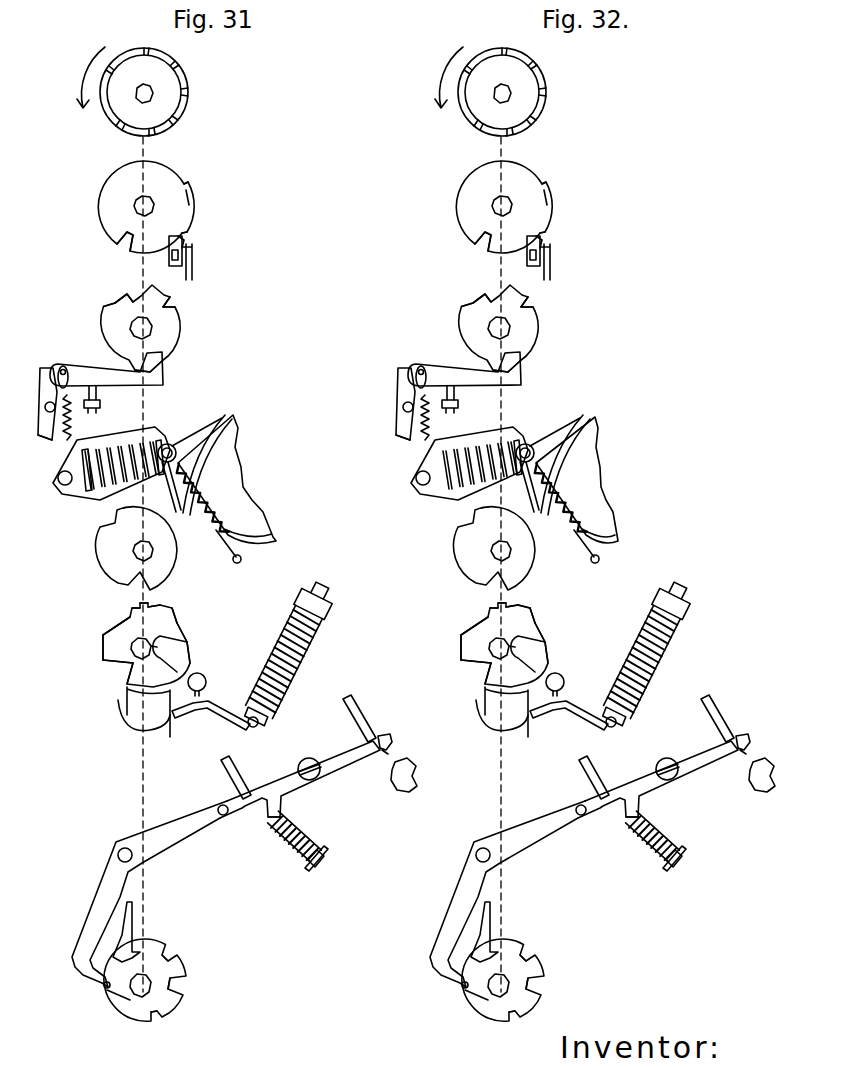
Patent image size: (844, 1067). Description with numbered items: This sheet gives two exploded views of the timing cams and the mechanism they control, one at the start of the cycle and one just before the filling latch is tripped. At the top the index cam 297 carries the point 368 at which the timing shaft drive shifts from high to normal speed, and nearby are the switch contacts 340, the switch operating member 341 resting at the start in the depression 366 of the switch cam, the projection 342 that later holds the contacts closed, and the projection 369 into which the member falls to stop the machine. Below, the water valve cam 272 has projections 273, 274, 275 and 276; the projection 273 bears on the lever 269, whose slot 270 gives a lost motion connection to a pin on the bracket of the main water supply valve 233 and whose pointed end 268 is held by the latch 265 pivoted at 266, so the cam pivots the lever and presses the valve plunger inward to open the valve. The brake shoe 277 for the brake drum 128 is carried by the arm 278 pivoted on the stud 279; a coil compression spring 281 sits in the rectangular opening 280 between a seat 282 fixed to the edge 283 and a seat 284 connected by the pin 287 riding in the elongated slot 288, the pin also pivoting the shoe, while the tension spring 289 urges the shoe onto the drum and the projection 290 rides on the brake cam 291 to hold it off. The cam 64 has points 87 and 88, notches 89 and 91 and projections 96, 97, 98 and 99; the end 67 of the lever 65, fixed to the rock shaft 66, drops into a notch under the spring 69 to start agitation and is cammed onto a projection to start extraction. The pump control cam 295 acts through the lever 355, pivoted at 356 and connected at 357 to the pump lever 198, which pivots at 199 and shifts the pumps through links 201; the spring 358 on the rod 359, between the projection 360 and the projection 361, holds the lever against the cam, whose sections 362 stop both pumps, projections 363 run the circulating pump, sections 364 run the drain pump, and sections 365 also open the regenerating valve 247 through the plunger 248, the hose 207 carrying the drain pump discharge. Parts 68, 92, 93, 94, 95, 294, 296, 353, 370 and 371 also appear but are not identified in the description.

In FIG. 31, the cam 64 is at (128, 682).
In FIG. 32, the cam 64 is at (536, 663).
In FIG. 31, the lever 65 is at (190, 710).
In FIG. 32, the lever 65 is at (569, 718).
In FIG. 31, the rock shaft 66 is at (204, 677).
In FIG. 32, the rock shaft 66 is at (568, 675).
In FIG. 31, the end of lever 67 is at (118, 705).
In FIG. 32, the end of lever 67 is at (490, 712).
In FIG. 31, the pivot pin 68 is at (248, 723).
In FIG. 32, the pivot pin 68 is at (600, 733).
In FIG. 31, the spring 69 is at (298, 658).
In FIG. 32, the spring 69 is at (647, 654).
In FIG. 31, the point 87 is at (108, 630).
In FIG. 32, the point 87 is at (461, 626).
In FIG. 31, the point 88 is at (172, 620).
In FIG. 32, the point 88 is at (540, 607).
In FIG. 31, the notch 89 is at (146, 645).
In FIG. 32, the notch 89 is at (504, 645).
In FIG. 31, the notch 91 is at (164, 658).
In FIG. 32, the notch 91 is at (522, 656).
In FIG. 31, the pawl tip 92 is at (118, 667).
In FIG. 32, the pawl tip 92 is at (469, 680).
In FIG. 31, the notch 93 is at (140, 613).
In FIG. 32, the notch 93 is at (474, 604).
In FIG. 31, the cam ear 94 is at (170, 638).
In FIG. 32, the cam ear 94 is at (548, 633).
In FIG. 31, the cam surface 95 is at (175, 607).
In FIG. 32, the cam surface 95 is at (485, 665).
In FIG. 31, the projection 96 is at (103, 637).
In FIG. 32, the projection 96 is at (447, 660).
In FIG. 31, the projection 97 is at (142, 603).
In FIG. 32, the projection 97 is at (474, 590).
In FIG. 32, the projection 98 is at (541, 590).
In FIG. 31, the projection 99 is at (192, 648).
In FIG. 32, the projection 99 is at (560, 631).
In FIG. 31, the brake drum 128 is at (258, 527).
In FIG. 32, the brake drum 128 is at (592, 480).
In FIG. 31, the lever 198 is at (286, 771).
In FIG. 32, the lever 198 is at (658, 775).
In FIG. 31, the pivot 199 is at (310, 758).
In FIG. 32, the pivot 199 is at (658, 761).
In FIG. 31, the links 201 is at (362, 712).
In FIG. 32, the links 201 is at (652, 745).
In FIG. 32, the flexible hose 207 is at (731, 766).
In FIG. 31, the valve 233 is at (95, 408).
In FIG. 31, the regenerating valve 247 is at (405, 762).
In FIG. 31, the plunger 248 is at (392, 772).
In FIG. 32, the plunger 248 is at (769, 764).
In FIG. 31, the latch 265 is at (43, 437).
In FIG. 32, the latch 265 is at (386, 446).
In FIG. 31, the pivot 266 is at (45, 407).
In FIG. 32, the pivot 266 is at (393, 417).
In FIG. 31, the pointed end 268 is at (50, 383).
In FIG. 32, the pointed end 268 is at (389, 404).
In FIG. 31, the lever 269 is at (88, 373).
In FIG. 32, the lever 269 is at (464, 363).
In FIG. 31, the slot 270 is at (62, 367).
In FIG. 32, the slot 270 is at (409, 359).
In FIG. 31, the cam 272 is at (181, 330).
In FIG. 32, the cam 272 is at (523, 328).
In FIG. 31, the projection 273 is at (154, 356).
In FIG. 32, the projection 273 is at (535, 365).
In FIG. 31, the projection 274 is at (98, 320).
In FIG. 32, the projection 274 is at (451, 311).
In FIG. 31, the projection 275 is at (126, 293).
In FIG. 32, the projection 275 is at (467, 289).
In FIG. 31, the projection 276 is at (172, 298).
In FIG. 32, the projection 276 is at (499, 285).
In FIG. 31, the brake shoe 277 is at (210, 413).
In FIG. 32, the brake shoe 277 is at (565, 453).
In FIG. 31, the arm 278 is at (152, 428).
In FIG. 32, the arm 278 is at (464, 476).
In FIG. 31, the stud 279 is at (60, 483).
In FIG. 32, the stud 279 is at (407, 490).
In FIG. 31, the rectangular opening 280 is at (117, 488).
In FIG. 32, the rectangular opening 280 is at (477, 483).
In FIG. 31, the coil compression spring 281 is at (110, 455).
In FIG. 32, the coil compression spring 281 is at (450, 465).
In FIG. 31, the seat 282 is at (88, 482).
In FIG. 32, the edge 283 is at (458, 415).
In FIG. 31, the seat 284 is at (100, 393).
In FIG. 32, the seat 284 is at (450, 393).
In FIG. 31, the pin 287 is at (177, 453).
In FIG. 32, the pin 287 is at (555, 453).
In FIG. 31, the elongated slot 288 is at (192, 465).
In FIG. 32, the elongated slot 288 is at (548, 458).
In FIG. 31, the tension spring 289 is at (205, 505).
In FIG. 32, the tension spring 289 is at (563, 498).
In FIG. 31, the projection 290 is at (208, 530).
In FIG. 31, the cam 291 is at (101, 557).
In FIG. 32, the cam 291 is at (478, 548).
In FIG. 32, the pin 294 is at (573, 542).
In FIG. 31, the pump control cam 295 is at (175, 957).
In FIG. 32, the pump control cam 295 is at (507, 973).
In FIG. 31, the disc 296 is at (162, 178).
In FIG. 32, the disc 296 is at (489, 207).
In FIG. 31, the index cam 297 is at (126, 124).
In FIG. 32, the index cam 297 is at (526, 92).
In FIG. 31, the switch contacts 340 is at (193, 253).
In FIG. 32, the switch contacts 340 is at (576, 262).
In FIG. 31, the switch operating member 341 is at (182, 241).
In FIG. 32, the switch operating member 341 is at (561, 244).
In FIG. 31, the projection 342 is at (190, 210).
In FIG. 32, the projection 342 is at (547, 222).
In FIG. 31, the ratchet tooth 353 is at (178, 70).
In FIG. 32, the ratchet tooth 353 is at (522, 81).
In FIG. 31, the lever 355 is at (100, 893).
In FIG. 32, the lever 355 is at (497, 894).
In FIG. 31, the pivot 356 is at (123, 848).
In FIG. 32, the pivot 356 is at (471, 841).
In FIG. 31, the pivotal connection 357 is at (223, 816).
In FIG. 32, the pivotal connection 357 is at (576, 829).
In FIG. 31, the spring 358 is at (290, 840).
In FIG. 32, the spring 358 is at (664, 836).
In FIG. 31, the rod 359 is at (332, 858).
In FIG. 32, the rod 359 is at (700, 858).
In FIG. 31, the projection 360 is at (312, 880).
In FIG. 32, the projection 360 is at (652, 864).
In FIG. 31, the projection 361 is at (270, 822).
In FIG. 32, the projection 361 is at (620, 832).
In FIG. 31, the sections 362 is at (107, 990).
In FIG. 32, the sections 362 is at (447, 968).
In FIG. 31, the projections 363 is at (161, 940).
In FIG. 32, the projections 363 is at (521, 959).
In FIG. 31, the sections 364 is at (131, 920).
In FIG. 32, the sections 364 is at (491, 957).
In FIG. 31, the sections 365 is at (126, 1002).
In FIG. 32, the sections 365 is at (465, 1018).
In FIG. 31, the depression 366 is at (172, 233).
In FIG. 32, the depression 366 is at (564, 220).
In FIG. 31, the point 368 is at (113, 68).
In FIG. 32, the point 368 is at (478, 92).
In FIG. 31, the projection 369 is at (124, 234).
In FIG. 32, the projection 369 is at (480, 233).
In FIG. 31, the notch 370 is at (147, 50).
In FIG. 32, the notch 370 is at (519, 40).
In FIG. 31, the step 371 is at (186, 192).
In FIG. 32, the step 371 is at (529, 200).